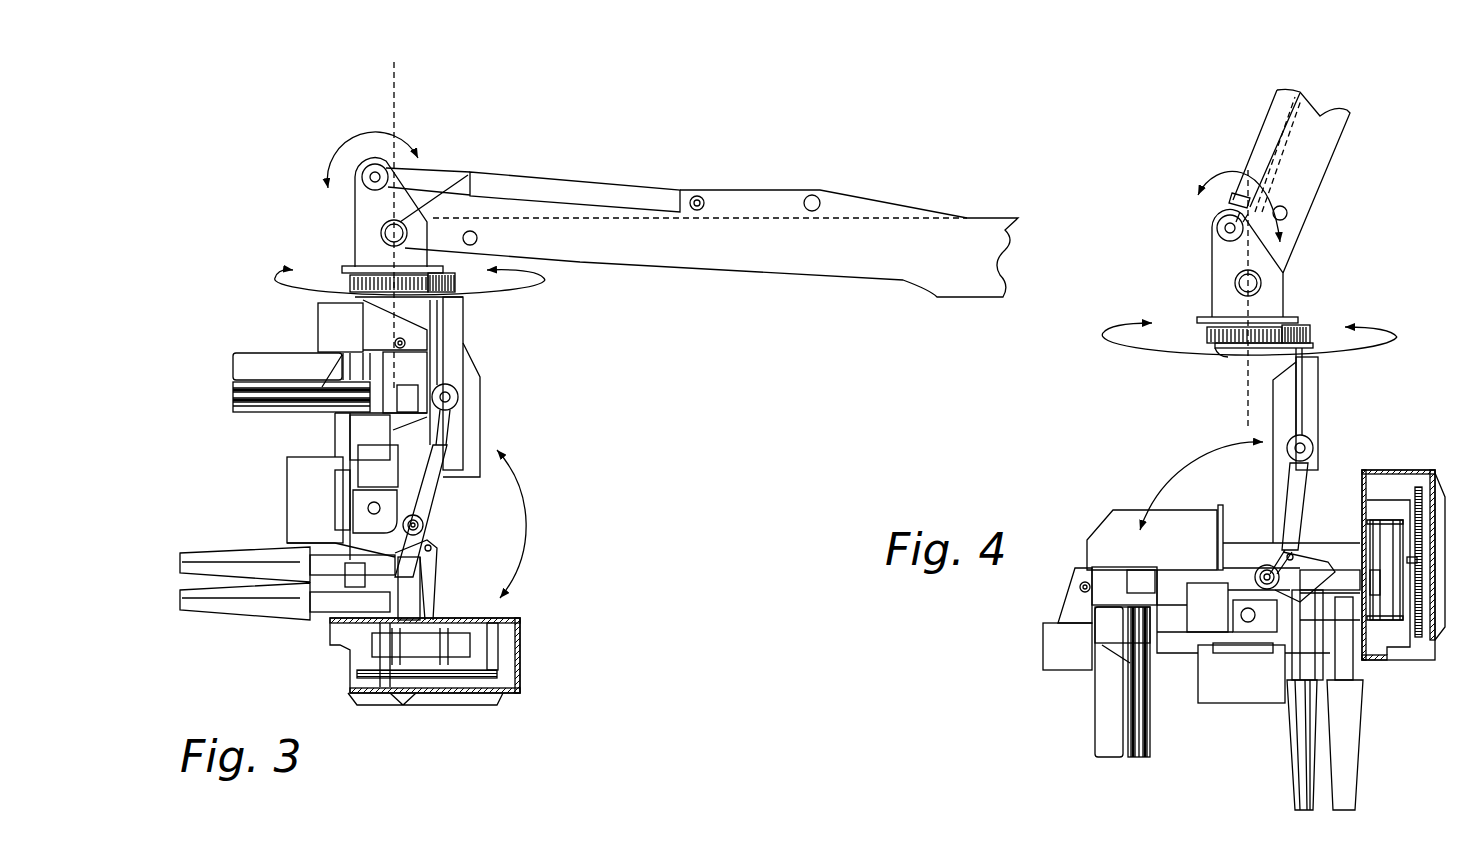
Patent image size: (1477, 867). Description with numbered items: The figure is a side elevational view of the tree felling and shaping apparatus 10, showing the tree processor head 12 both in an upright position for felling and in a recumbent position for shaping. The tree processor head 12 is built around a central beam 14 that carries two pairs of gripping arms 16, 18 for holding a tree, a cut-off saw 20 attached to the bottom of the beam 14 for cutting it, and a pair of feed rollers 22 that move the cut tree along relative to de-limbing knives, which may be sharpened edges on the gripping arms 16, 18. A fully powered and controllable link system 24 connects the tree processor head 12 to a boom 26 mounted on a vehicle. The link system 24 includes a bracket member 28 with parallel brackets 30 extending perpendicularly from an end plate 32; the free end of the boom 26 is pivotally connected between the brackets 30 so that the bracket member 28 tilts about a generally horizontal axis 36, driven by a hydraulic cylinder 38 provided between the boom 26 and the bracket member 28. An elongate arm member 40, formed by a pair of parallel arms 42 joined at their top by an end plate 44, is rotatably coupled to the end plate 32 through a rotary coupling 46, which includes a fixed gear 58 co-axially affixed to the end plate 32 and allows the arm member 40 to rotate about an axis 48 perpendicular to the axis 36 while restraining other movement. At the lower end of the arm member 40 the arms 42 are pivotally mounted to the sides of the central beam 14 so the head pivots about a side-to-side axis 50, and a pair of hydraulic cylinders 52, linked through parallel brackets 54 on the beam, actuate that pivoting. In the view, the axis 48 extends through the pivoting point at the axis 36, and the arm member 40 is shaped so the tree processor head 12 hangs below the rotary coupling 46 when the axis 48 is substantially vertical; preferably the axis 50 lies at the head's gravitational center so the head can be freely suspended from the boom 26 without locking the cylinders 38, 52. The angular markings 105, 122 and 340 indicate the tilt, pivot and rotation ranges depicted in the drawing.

In FIG. 3, the tree felling and shaping apparatus 10 is at (618, 334).
In FIG. 4, the tree felling and shaping apparatus 10 is at (1133, 367).
In FIG. 3, the tree processor head 12 is at (545, 462).
In FIG. 4, the tree processor head 12 is at (1092, 489).
In FIG. 3, the central beam 14 is at (446, 592).
In FIG. 4, the central beam 14 is at (1366, 500).
In FIG. 3, the gripping arms 16 is at (248, 370).
In FIG. 4, the gripping arms 16 is at (1108, 730).
In FIG. 3, the gripping arms 18 is at (208, 550).
In FIG. 4, the gripping arms 18 is at (1293, 785).
In FIG. 3, the cut-off saw 20 is at (360, 672).
In FIG. 4, the cut-off saw 20 is at (1418, 638).
In FIG. 3, the feed rollers 22 is at (312, 498).
In FIG. 4, the feed rollers 22 is at (1222, 678).
In FIG. 3, the link system 24 is at (276, 220).
In FIG. 4, the link system 24 is at (1333, 367).
In FIG. 3, the boom 26 is at (695, 250).
In FIG. 4, the boom 26 is at (1320, 143).
In FIG. 3, the bracket member 28 is at (352, 208).
In FIG. 4, the bracket member 28 is at (1208, 278).
In FIG. 3, the parallel brackets 30 is at (331, 180).
In FIG. 4, the parallel brackets 30 is at (1210, 256).
In FIG. 3, the end plate 32 is at (345, 268).
In FIG. 4, the end plate 32 is at (1205, 320).
In FIG. 3, the axis 36 is at (408, 222).
In FIG. 4, the axis 36 is at (1265, 290).
In FIG. 3, the hydraulic cylinder 38 is at (510, 176).
In FIG. 4, the hydraulic cylinder 38 is at (1265, 130).
In FIG. 3, the arm member 40 is at (470, 327).
In FIG. 4, the arm member 40 is at (1320, 398).
In FIG. 3, the parallel arms 42 is at (458, 378).
In FIG. 4, the parallel arms 42 is at (1272, 396).
In FIG. 3, the end plate 44 is at (362, 302).
In FIG. 4, the end plate 44 is at (1240, 347).
In FIG. 3, the rotary coupling 46 is at (478, 283).
In FIG. 4, the rotary coupling 46 is at (1319, 321).
In FIG. 3, the axis 48 is at (396, 92).
In FIG. 4, the axis 48 is at (1247, 425).
In FIG. 3, the axis 50 is at (425, 522).
In FIG. 4, the axis 50 is at (1262, 575).
In FIG. 3, the hydraulic cylinders 52 is at (441, 463).
In FIG. 4, the hydraulic cylinders 52 is at (1293, 478).
In FIG. 3, the parallel brackets 54 is at (437, 572).
In FIG. 4, the parallel brackets 54 is at (1312, 562).
In FIG. 3, the fixed gear 58 is at (352, 282).
In FIG. 4, the fixed gear 58 is at (1315, 338).
In FIG. 3, the tilt angle 105 is at (383, 128).
In FIG. 4, the tilt angle 105 is at (1240, 178).
In FIG. 3, the tilt angle 122 is at (527, 520).
In FIG. 4, the tilt angle 122 is at (1207, 470).
In FIG. 3, the rotation angle 340 is at (300, 288).
In FIG. 4, the rotation angle 340 is at (1103, 338).